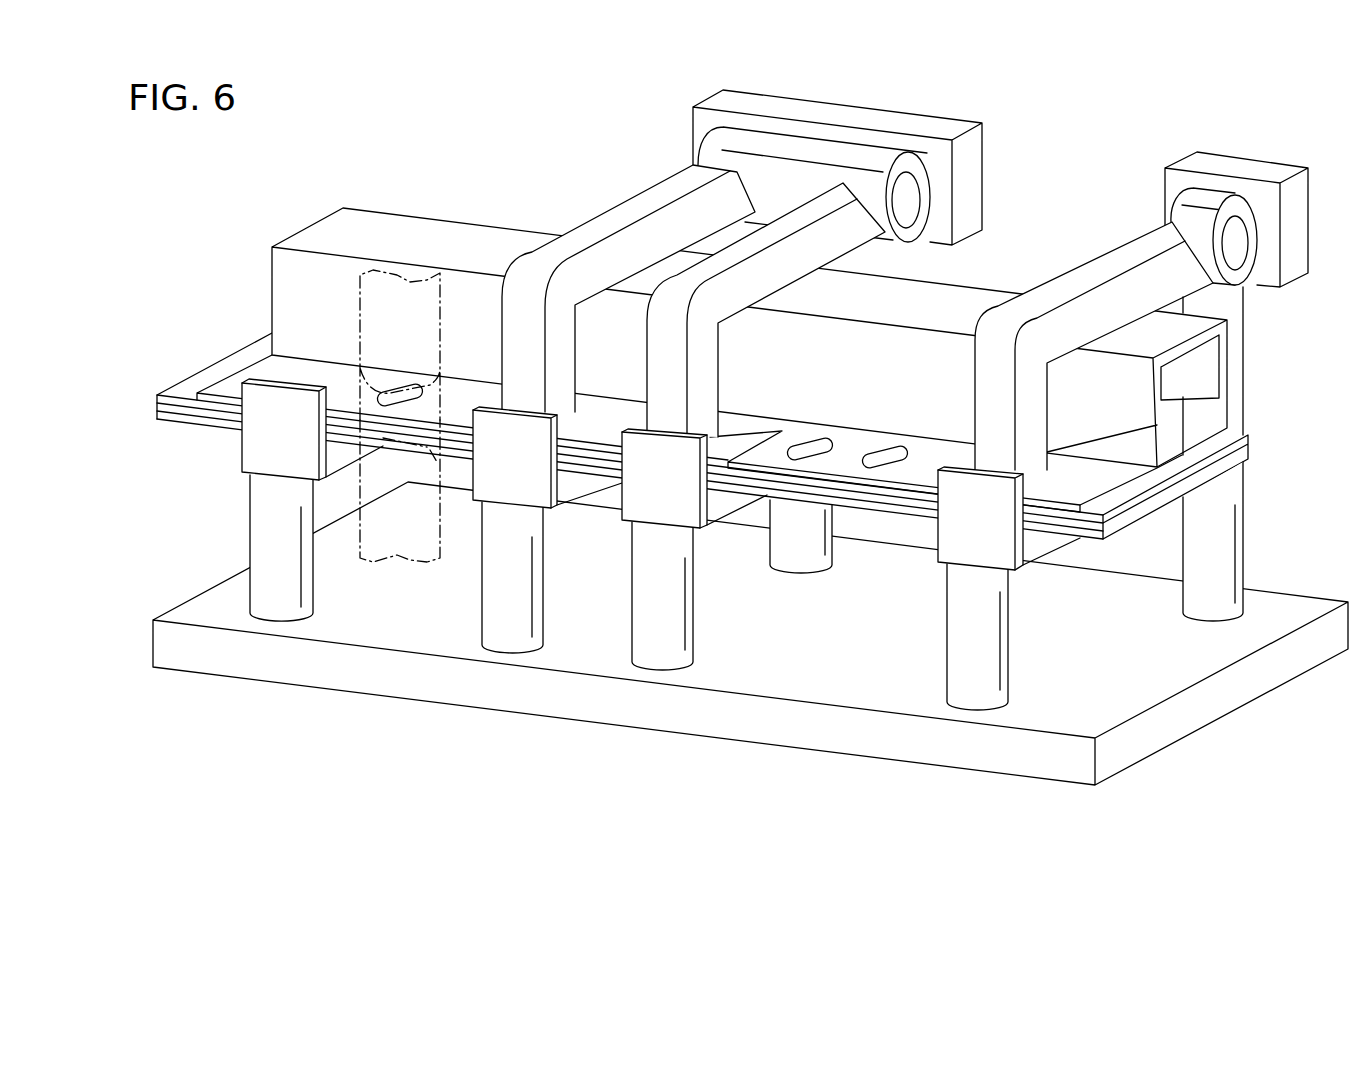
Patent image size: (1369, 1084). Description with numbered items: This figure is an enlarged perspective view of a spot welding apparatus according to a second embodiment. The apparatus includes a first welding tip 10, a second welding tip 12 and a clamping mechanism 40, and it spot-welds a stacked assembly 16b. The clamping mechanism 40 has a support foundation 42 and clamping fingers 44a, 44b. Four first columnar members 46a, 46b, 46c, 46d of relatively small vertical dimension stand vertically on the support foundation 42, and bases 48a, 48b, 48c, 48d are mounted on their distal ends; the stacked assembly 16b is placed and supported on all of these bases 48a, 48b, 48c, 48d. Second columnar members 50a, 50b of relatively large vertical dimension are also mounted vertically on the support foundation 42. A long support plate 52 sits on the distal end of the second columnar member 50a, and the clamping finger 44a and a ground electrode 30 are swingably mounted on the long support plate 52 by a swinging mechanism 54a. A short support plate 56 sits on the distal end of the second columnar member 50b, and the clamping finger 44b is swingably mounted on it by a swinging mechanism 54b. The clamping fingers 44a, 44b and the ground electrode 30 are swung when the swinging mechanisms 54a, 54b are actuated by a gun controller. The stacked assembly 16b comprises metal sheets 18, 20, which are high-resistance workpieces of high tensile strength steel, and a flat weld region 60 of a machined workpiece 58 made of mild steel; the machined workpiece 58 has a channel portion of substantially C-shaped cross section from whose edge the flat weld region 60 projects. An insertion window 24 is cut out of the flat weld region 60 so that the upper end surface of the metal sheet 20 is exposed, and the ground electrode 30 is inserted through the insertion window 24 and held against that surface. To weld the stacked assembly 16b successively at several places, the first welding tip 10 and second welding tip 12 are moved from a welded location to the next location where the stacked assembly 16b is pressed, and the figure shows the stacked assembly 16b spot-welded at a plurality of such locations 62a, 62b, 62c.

The first welding tip 10 is at (360, 312).
The second welding tip 12 is at (400, 563).
The stacked assembly 16b is at (647, 428).
The metal sheet 18 is at (157, 418).
The metal sheet 20 is at (157, 404).
The insertion window 24 is at (755, 437).
The ground electrode 30 is at (795, 218).
The clamping mechanism 40 is at (906, 268).
The support foundation 42 is at (658, 714).
The clamping finger 44a is at (633, 206).
The clamping finger 44b is at (1105, 268).
The first columnar member 46a is at (262, 535).
The first columnar member 46b is at (518, 612).
The first columnar member 46c is at (667, 630).
The first columnar member 46d is at (982, 670).
The base 48a is at (256, 447).
The base 48b is at (528, 493).
The base 48c is at (676, 512).
The base 48d is at (993, 560).
The second columnar member 50a is at (803, 560).
The second columnar member 50b is at (1215, 605).
The long support plate 52 is at (957, 125).
The swinging mechanism 54a is at (832, 152).
The swinging mechanism 54b is at (1218, 192).
The short support plate 56 is at (1279, 167).
The machined workpiece 58 is at (415, 237).
The flat weld region 60 is at (222, 390).
The location 62a is at (893, 453).
The location 62b is at (818, 446).
The location 62c is at (397, 390).